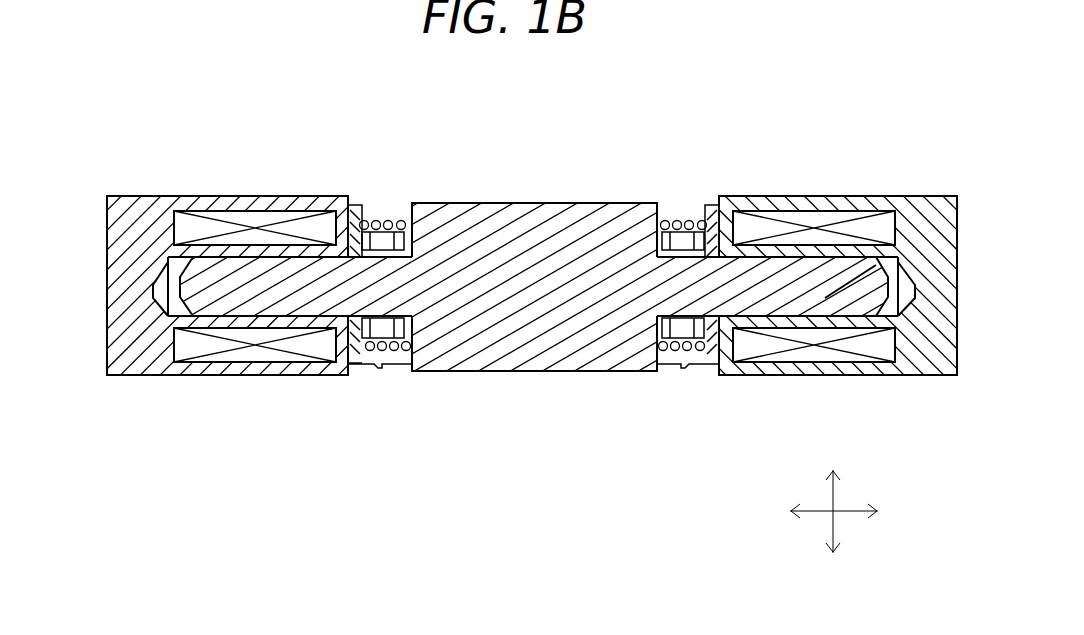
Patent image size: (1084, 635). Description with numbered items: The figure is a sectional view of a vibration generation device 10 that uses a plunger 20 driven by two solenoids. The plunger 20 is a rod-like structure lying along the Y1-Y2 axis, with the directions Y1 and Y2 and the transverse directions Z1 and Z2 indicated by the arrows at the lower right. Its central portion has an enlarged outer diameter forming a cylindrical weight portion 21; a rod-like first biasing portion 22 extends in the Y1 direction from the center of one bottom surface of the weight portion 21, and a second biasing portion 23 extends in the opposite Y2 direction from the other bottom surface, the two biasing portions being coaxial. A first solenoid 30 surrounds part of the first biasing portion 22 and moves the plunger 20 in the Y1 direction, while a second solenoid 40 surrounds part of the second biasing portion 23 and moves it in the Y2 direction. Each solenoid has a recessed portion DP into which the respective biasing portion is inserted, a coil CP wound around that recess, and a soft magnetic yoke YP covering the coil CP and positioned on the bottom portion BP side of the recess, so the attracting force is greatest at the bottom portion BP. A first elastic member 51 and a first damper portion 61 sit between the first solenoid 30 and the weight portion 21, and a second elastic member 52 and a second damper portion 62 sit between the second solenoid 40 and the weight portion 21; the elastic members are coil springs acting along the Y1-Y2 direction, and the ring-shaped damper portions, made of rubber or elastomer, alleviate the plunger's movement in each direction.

The vibration generation device 10 is at (188, 108).
The plunger 20 is at (520, 205).
The weight portion 21 is at (541, 301).
The first biasing portion 22 is at (311, 301).
The second biasing portion 23 is at (811, 301).
The first solenoid 30 is at (148, 198).
The second solenoid 40 is at (882, 205).
The first elastic member 51 is at (378, 368).
The second elastic member 52 is at (681, 368).
The first damper portion 61 is at (353, 205).
The second damper portion 62 is at (712, 207).
The coil CP is at (258, 198).
The yoke YP is at (118, 338).
The bottom portion BP is at (150, 288).
The recessed portion DP is at (168, 318).
The Z1 direction Z1 is at (834, 569).
The Z2 direction Z2 is at (834, 500).
The Y1 direction Y1 is at (817, 512).
The Y2 direction Y2 is at (890, 512).